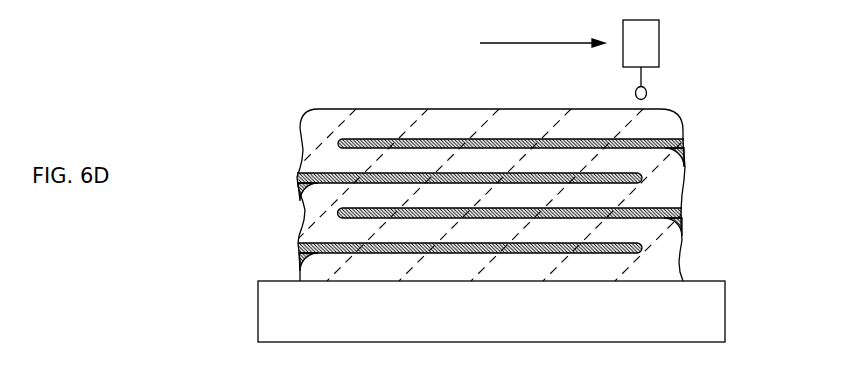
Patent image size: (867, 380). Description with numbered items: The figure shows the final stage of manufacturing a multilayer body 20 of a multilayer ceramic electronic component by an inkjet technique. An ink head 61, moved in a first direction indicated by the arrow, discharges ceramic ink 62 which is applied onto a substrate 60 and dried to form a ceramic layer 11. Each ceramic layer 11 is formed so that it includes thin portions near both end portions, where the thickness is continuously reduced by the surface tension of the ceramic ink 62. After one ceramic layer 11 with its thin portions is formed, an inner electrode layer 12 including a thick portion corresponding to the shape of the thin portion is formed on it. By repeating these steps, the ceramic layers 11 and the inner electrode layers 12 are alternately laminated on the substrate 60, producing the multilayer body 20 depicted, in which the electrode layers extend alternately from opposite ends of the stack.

The ceramic layer 11 is at (670, 190).
The inner electrode layer 12 is at (685, 143).
The multilayer body 20 is at (283, 99).
The substrate 60 is at (712, 313).
The ink head 61 is at (657, 45).
The ceramic ink 62 is at (648, 94).